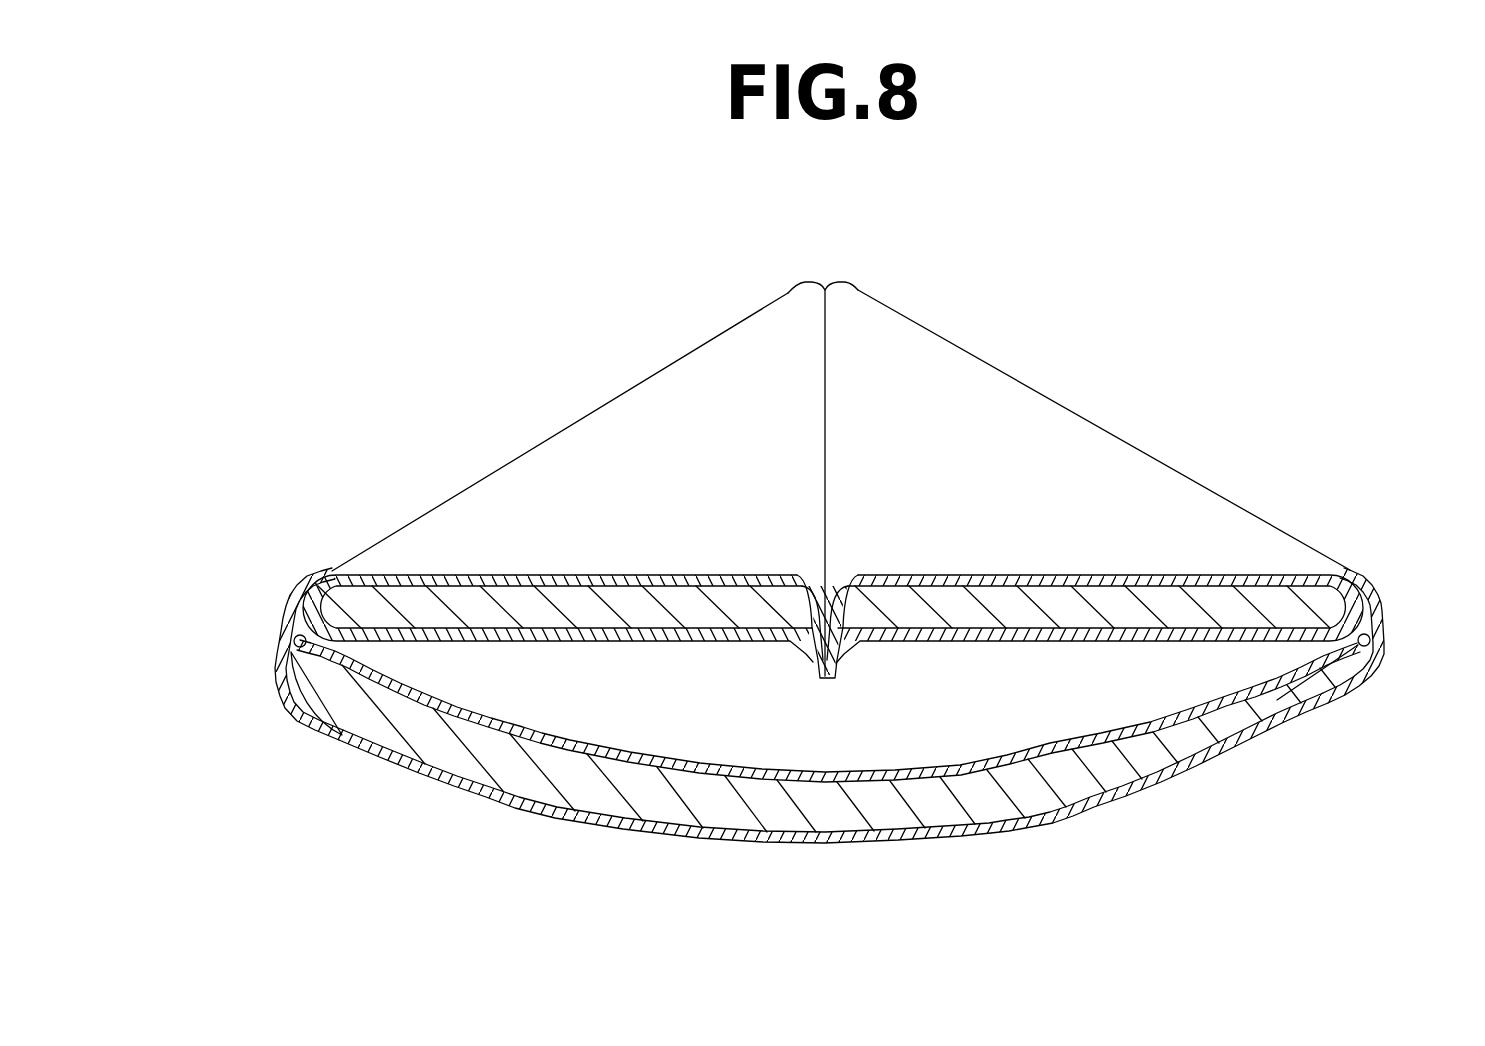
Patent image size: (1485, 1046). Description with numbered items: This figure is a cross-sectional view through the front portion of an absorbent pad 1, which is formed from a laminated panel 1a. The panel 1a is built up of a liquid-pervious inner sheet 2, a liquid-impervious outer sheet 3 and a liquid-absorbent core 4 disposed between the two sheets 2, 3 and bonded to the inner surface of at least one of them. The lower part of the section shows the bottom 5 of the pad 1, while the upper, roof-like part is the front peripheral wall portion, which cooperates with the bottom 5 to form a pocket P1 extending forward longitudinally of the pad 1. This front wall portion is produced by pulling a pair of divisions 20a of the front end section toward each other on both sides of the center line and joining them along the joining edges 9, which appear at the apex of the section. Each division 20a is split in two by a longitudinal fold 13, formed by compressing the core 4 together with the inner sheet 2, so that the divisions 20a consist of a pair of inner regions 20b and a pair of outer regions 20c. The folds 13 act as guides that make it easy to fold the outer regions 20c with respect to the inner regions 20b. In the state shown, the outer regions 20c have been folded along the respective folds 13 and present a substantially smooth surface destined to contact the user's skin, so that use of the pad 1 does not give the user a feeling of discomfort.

The absorbent pad 1 is at (1190, 432).
The laminated panel 1a is at (847, 747).
The liquid-pervious inner sheet 2 is at (829, 749).
The liquid-impervious outer sheet 3 is at (866, 842).
The liquid-absorbent core 4 is at (990, 806).
The bottom 5 is at (714, 742).
The joining edges 9 is at (828, 343).
The folds 13 is at (296, 632).
The divisions 20a is at (348, 560).
The inner regions 20b is at (680, 374).
The outer regions 20c is at (308, 722).
The pocket P1 is at (1092, 650).